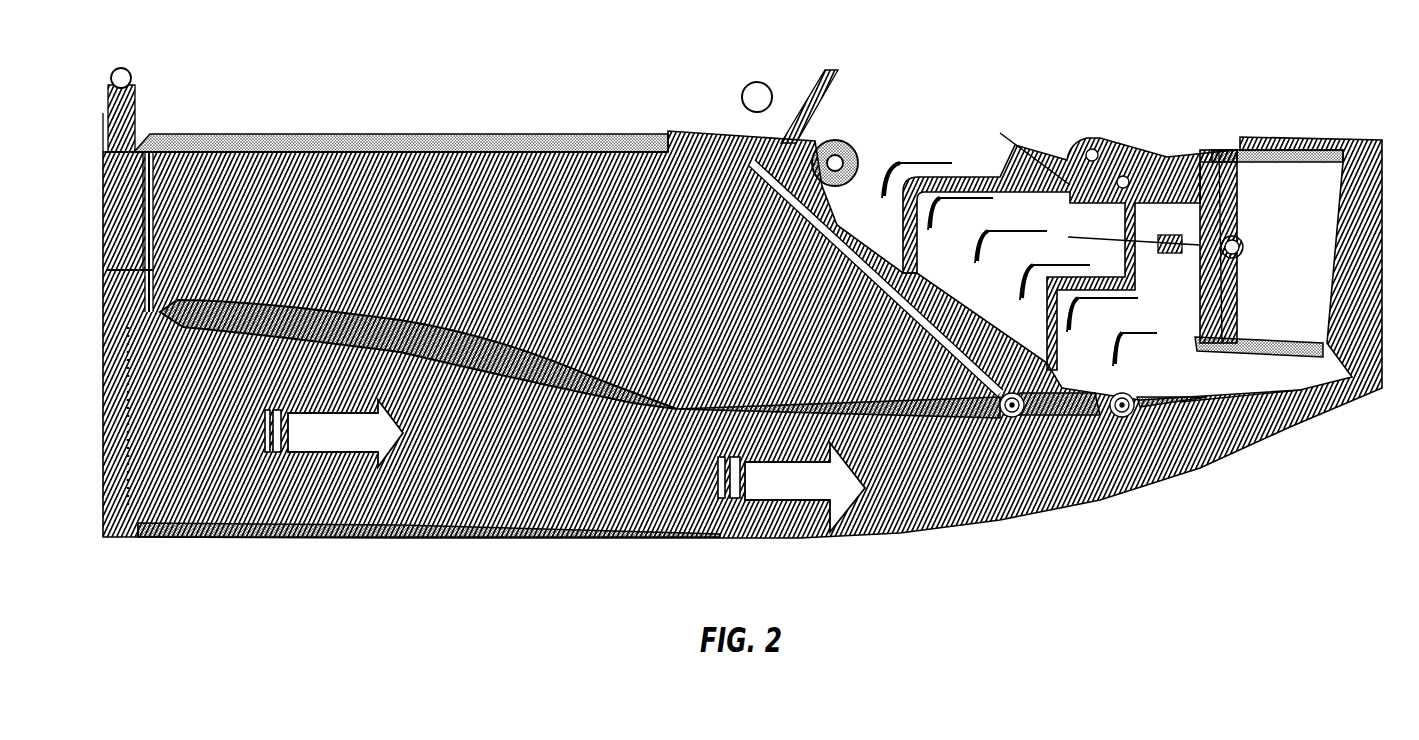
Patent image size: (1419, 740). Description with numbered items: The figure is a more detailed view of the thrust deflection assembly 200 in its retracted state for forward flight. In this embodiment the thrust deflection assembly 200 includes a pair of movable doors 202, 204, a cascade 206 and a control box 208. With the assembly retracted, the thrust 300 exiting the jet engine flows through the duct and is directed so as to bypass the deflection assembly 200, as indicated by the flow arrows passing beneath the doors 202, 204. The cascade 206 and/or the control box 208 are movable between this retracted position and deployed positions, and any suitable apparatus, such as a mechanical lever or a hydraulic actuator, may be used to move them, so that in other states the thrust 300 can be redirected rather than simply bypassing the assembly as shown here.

The thrust deflection assembly 200 is at (383, 70).
The movable door 202 is at (430, 310).
The movable door 204 is at (897, 422).
The cascade 206 is at (843, 141).
The control box 208 is at (1272, 152).
The thrust 300 is at (327, 467).